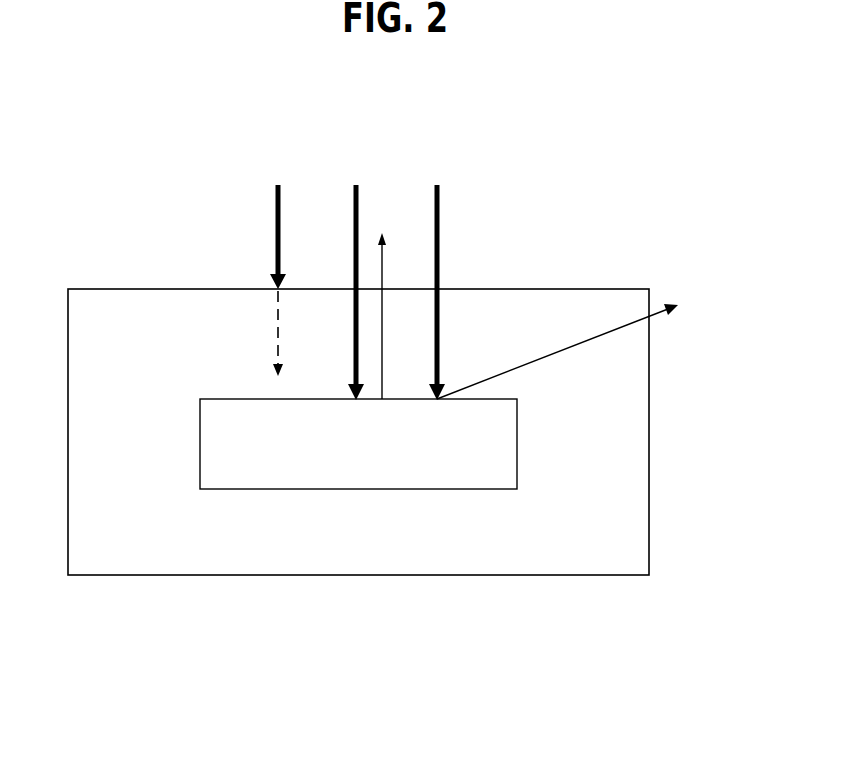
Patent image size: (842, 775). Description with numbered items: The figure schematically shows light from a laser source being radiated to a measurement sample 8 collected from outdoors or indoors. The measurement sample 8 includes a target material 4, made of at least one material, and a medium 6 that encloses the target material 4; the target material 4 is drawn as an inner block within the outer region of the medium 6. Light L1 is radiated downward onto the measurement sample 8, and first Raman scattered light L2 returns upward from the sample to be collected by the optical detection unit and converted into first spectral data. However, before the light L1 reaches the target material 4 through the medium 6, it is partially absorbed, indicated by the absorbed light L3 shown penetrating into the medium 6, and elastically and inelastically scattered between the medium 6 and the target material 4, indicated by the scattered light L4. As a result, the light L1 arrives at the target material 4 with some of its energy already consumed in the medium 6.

The target material 4 is at (292, 468).
The medium 6 is at (378, 552).
The measurement sample 8 is at (358, 515).
The light L1 is at (356, 215).
The first Raman scattered light L2 is at (382, 269).
The absorbed light L3 is at (276, 331).
The elastically and inelastically scattered light L4 is at (613, 330).